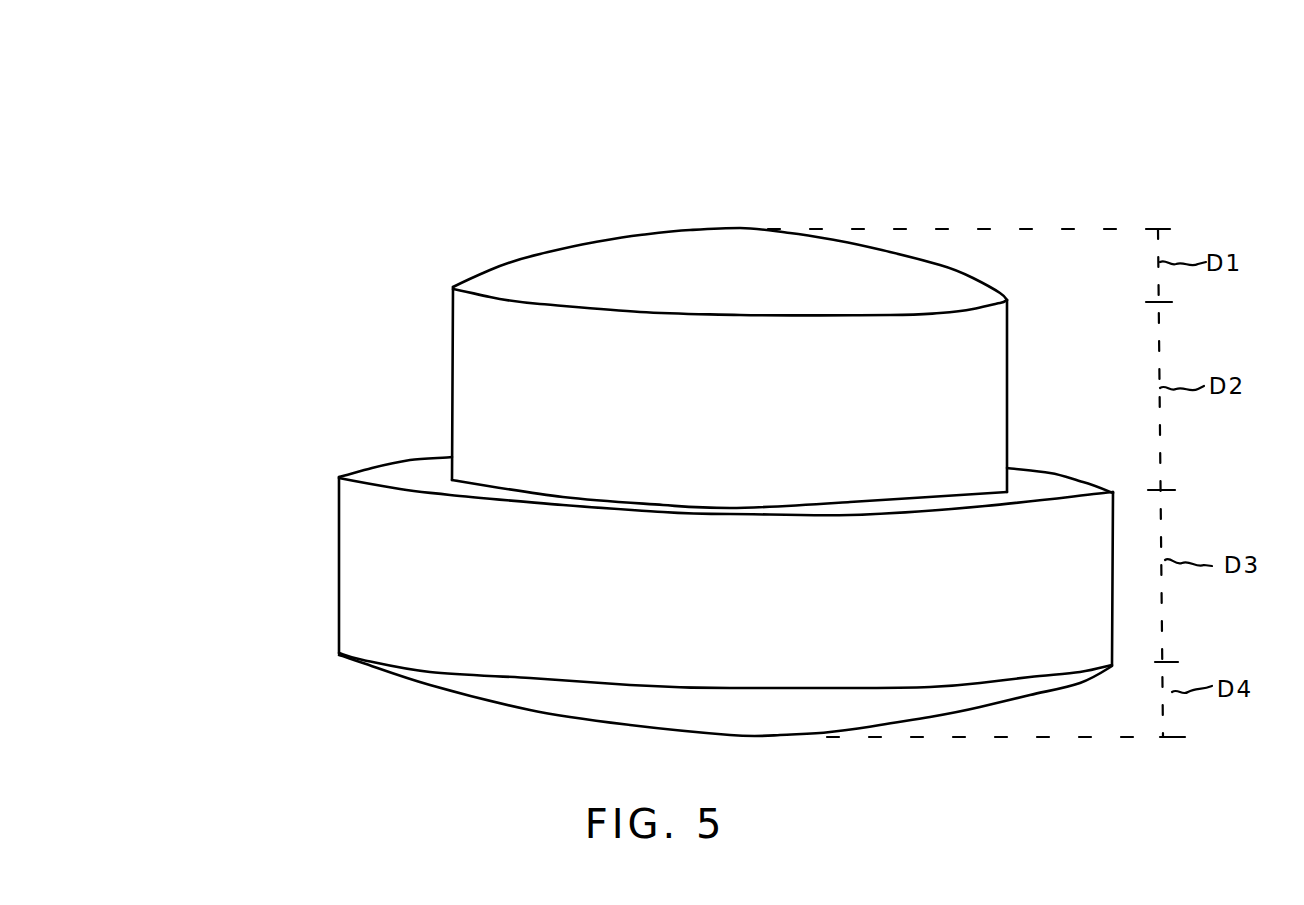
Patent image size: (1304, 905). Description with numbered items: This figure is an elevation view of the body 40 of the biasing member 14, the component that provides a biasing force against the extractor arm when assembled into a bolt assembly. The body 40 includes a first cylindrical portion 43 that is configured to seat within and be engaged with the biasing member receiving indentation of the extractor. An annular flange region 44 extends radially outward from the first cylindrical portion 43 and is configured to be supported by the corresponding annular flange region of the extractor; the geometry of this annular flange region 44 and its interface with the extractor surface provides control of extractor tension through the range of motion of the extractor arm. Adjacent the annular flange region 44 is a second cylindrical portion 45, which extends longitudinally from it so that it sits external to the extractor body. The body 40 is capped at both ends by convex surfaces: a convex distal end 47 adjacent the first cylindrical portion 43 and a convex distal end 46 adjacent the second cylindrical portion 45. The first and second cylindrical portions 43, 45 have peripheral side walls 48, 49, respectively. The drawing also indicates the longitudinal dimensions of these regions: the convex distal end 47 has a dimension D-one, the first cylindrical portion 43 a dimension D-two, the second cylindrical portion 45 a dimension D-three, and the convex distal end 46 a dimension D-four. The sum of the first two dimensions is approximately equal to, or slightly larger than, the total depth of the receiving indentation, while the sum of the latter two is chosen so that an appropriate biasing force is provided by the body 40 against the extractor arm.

The biasing member 14 is at (1067, 88).
The body 40 is at (643, 485).
The first cylindrical portion 43 is at (468, 338).
The annular flange region 44 is at (372, 470).
The second cylindrical portion 45 is at (365, 525).
The convex distal end 46 is at (523, 685).
The convex distal end 47 is at (571, 268).
The peripheral side wall 48 is at (688, 614).
The peripheral side wall 49 is at (694, 354).